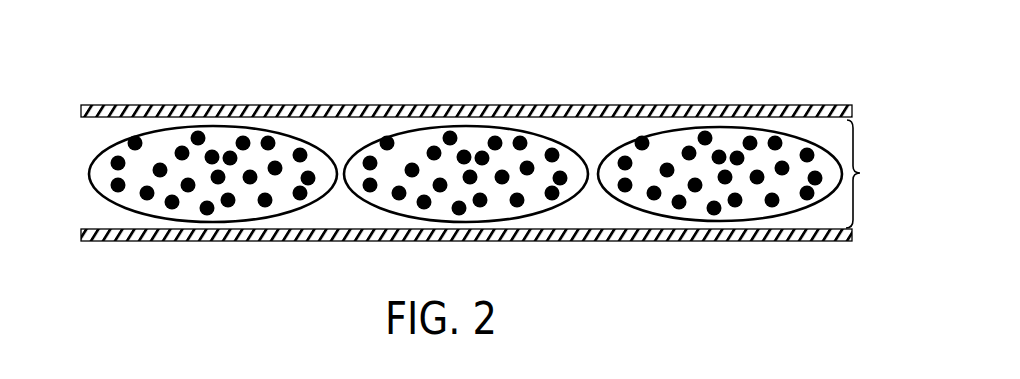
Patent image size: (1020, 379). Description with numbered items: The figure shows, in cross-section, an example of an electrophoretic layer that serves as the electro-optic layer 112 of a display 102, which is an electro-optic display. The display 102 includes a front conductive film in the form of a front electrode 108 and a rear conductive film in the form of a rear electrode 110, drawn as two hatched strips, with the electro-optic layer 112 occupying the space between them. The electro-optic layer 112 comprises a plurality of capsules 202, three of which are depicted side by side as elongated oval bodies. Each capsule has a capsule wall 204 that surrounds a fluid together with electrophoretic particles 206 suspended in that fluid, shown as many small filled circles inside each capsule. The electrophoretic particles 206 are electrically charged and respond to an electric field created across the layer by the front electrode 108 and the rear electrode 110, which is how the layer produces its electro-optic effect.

The display 102 is at (128, 78).
The front electrode 108 is at (413, 106).
The rear electrode 110 is at (852, 238).
The electro-optic layer 112 is at (874, 174).
The capsules 202 is at (812, 132).
The capsule wall 204 is at (680, 127).
The electrophoretic particles 206 is at (720, 214).